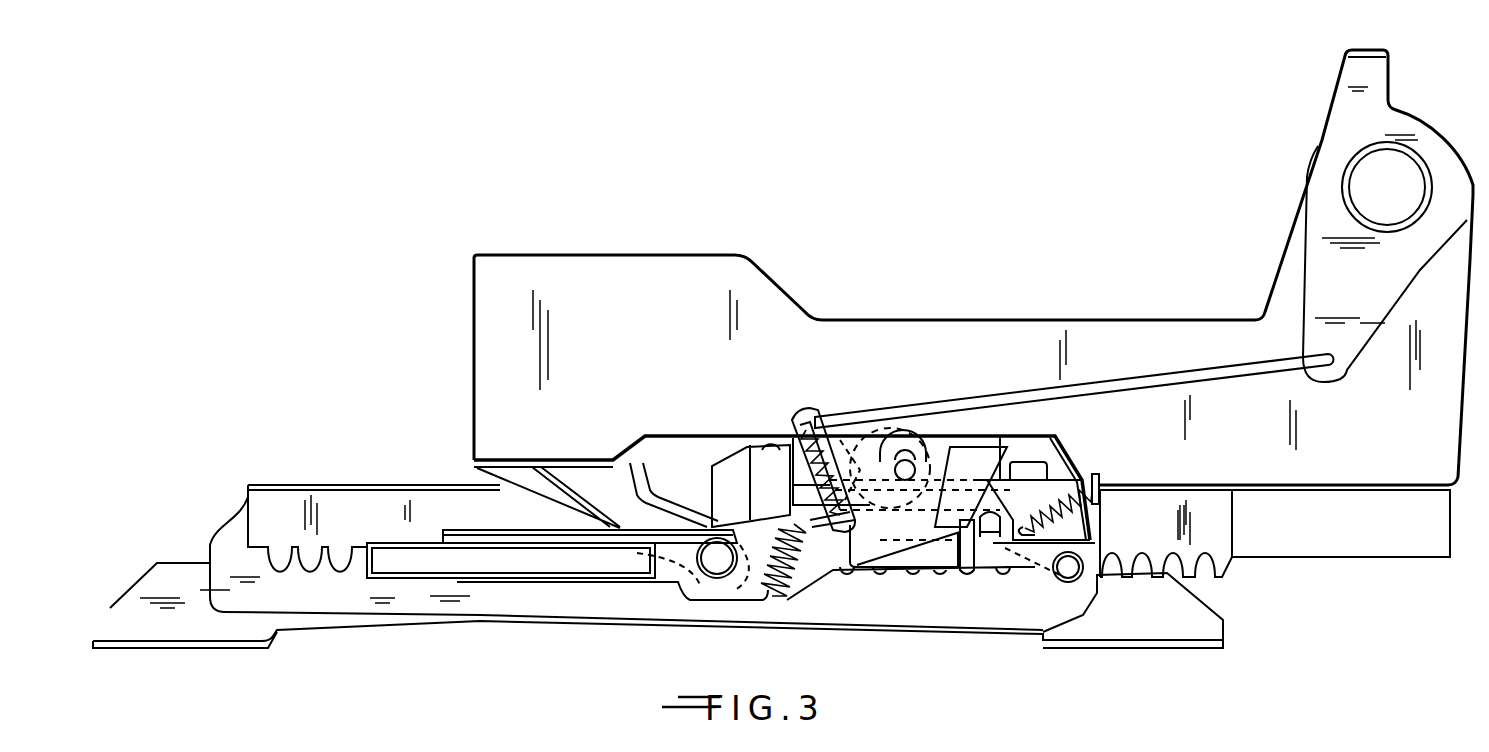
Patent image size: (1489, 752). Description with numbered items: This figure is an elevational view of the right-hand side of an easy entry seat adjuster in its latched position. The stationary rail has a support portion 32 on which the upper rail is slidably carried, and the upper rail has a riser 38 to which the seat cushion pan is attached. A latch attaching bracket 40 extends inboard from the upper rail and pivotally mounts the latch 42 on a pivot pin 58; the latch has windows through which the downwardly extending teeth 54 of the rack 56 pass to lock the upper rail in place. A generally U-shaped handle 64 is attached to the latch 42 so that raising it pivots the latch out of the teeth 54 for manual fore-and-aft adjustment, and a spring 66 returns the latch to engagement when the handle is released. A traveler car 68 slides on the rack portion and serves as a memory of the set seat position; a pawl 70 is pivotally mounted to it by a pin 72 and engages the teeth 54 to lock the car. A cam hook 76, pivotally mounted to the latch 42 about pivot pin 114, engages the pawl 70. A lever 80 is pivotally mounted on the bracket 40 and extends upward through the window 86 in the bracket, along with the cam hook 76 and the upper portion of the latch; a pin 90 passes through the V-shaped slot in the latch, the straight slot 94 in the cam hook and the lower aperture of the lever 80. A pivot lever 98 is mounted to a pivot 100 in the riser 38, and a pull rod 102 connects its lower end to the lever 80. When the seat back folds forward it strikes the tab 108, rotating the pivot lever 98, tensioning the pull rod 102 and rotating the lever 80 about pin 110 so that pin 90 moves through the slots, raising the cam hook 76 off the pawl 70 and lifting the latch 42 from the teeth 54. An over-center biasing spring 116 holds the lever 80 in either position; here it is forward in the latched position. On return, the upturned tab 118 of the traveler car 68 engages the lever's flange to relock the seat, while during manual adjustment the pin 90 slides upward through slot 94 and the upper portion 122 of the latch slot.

The support portion 32 is at (295, 480).
The riser 38 is at (838, 320).
The latch attaching bracket 40 is at (478, 500).
The latch 42 is at (832, 585).
The teeth 54 is at (317, 573).
The rack 56 is at (1207, 540).
The pivot pin 58 is at (712, 578).
The handle 64 is at (430, 590).
The spring 66 is at (775, 592).
The traveler car 68 is at (1060, 476).
The pawl 70 is at (1032, 583).
The pin 72 is at (1067, 582).
The cam hook 76 is at (965, 578).
The lever 80 is at (812, 410).
The window 86 is at (768, 437).
The pin 90 is at (876, 545).
The straight slot 94 is at (910, 448).
The pivot lever 98 is at (1323, 108).
The pivot 100 is at (1340, 187).
The pull rod 102 is at (1203, 363).
The tab 108 is at (1353, 43).
The pin 110 is at (815, 528).
The pivot pin 114 is at (903, 545).
The biasing spring 116 is at (822, 436).
The upturned tab 118 is at (852, 448).
The upper portion of slot 122 is at (908, 438).